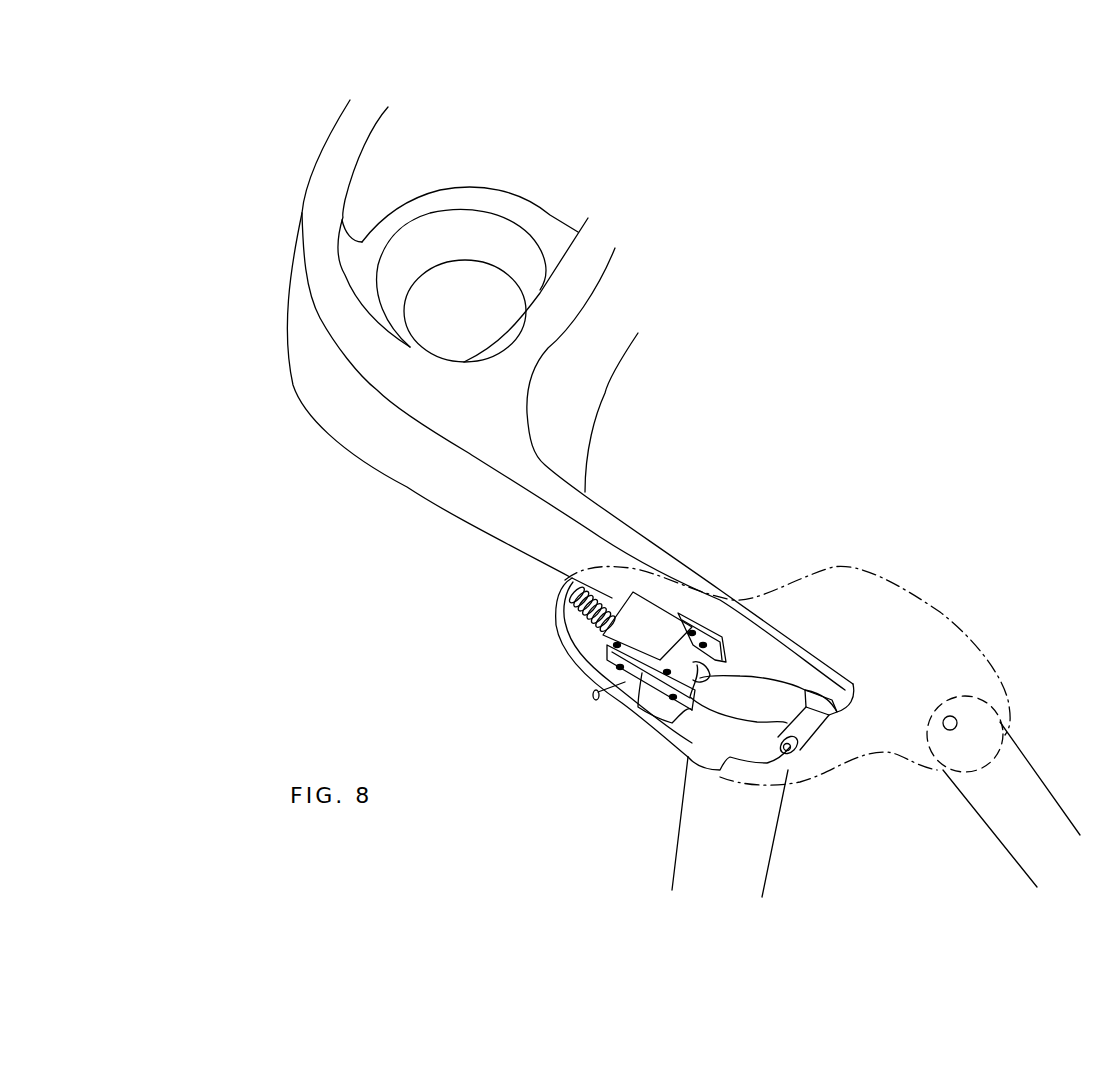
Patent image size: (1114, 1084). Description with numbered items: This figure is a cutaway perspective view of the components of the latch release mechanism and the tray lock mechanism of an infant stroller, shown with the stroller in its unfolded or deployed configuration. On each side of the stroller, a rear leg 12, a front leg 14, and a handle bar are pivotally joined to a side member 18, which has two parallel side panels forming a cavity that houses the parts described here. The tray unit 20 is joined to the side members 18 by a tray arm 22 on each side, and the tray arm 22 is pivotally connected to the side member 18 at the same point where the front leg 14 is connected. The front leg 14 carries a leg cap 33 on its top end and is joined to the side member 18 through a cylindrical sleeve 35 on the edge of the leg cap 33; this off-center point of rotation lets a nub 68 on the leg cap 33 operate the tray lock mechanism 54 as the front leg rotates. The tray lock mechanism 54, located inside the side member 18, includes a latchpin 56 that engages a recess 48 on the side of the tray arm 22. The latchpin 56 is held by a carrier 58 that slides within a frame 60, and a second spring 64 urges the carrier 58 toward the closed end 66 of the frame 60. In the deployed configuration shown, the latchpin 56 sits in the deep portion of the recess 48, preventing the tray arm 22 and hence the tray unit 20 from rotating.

The rear leg 12 is at (1025, 760).
The front leg 14 is at (670, 865).
The side member 18 is at (878, 752).
The tray unit 20 is at (317, 482).
The tray arm 22 is at (600, 503).
The leg cap 33 is at (750, 747).
The cylindrical sleeve 35 is at (805, 750).
The recess 48 is at (684, 612).
The tray lock mechanism 54 is at (596, 690).
The latchpin 56 is at (695, 632).
The carrier 58 is at (640, 670).
The frame 60 is at (643, 598).
The second spring 64 is at (572, 628).
The closed end 66 is at (680, 683).
The nub 68 is at (712, 677).